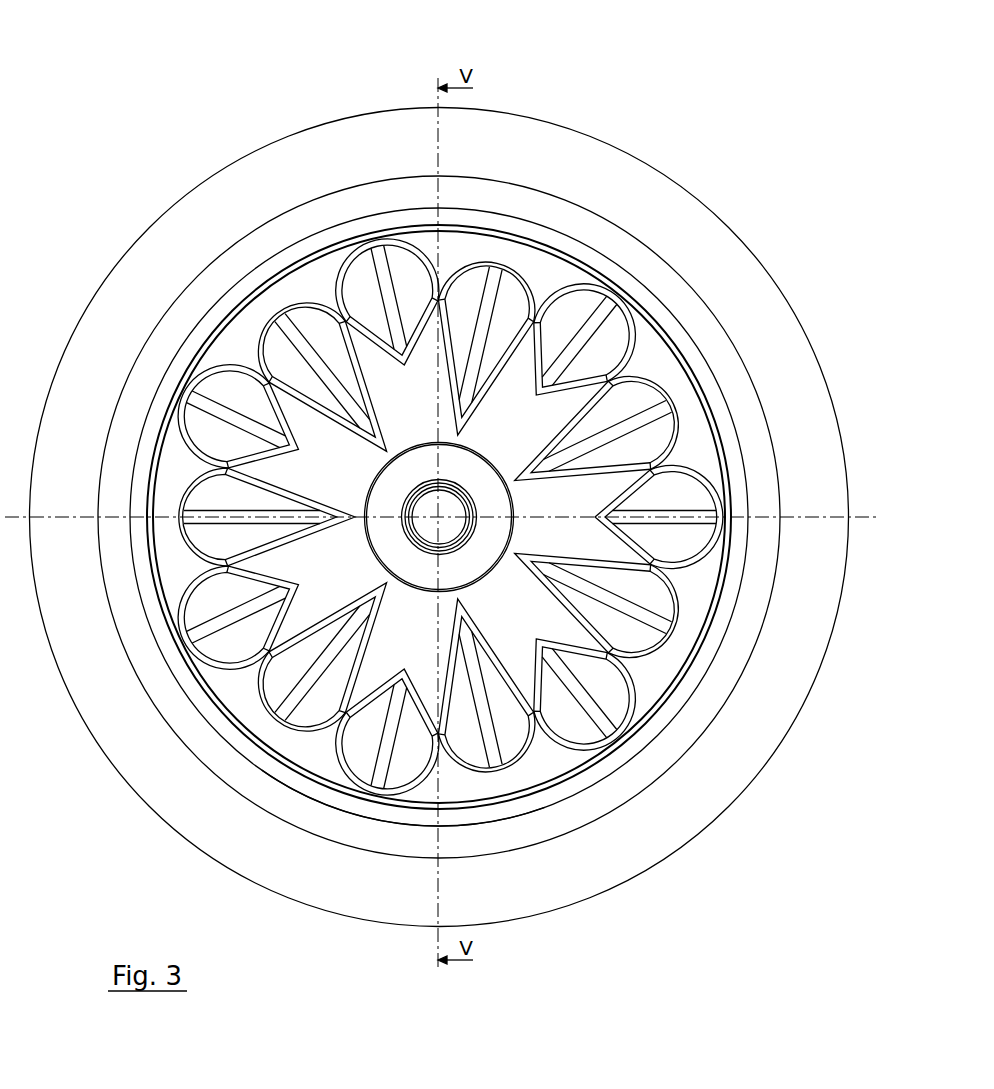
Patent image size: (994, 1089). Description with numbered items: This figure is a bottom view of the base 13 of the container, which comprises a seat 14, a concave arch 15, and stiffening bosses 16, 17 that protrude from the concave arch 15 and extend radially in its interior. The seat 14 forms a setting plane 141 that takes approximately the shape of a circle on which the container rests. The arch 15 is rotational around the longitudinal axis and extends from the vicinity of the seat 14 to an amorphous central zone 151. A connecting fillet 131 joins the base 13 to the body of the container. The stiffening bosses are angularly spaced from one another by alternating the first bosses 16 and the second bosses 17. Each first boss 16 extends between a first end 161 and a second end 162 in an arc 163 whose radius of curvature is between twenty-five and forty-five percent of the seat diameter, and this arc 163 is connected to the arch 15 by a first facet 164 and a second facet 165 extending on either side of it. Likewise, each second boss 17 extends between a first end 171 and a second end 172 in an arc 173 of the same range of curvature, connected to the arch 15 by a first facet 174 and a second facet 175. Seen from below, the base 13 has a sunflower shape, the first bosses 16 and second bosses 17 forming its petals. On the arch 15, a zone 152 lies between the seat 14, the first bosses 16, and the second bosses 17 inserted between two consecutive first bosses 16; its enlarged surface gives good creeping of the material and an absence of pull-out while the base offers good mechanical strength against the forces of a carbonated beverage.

The base 13 is at (672, 123).
The connecting fillet 131 is at (683, 230).
The seat 14 is at (497, 832).
The setting plane 141 is at (400, 830).
The concave arch 15 is at (425, 250).
The amorphous central zone 151 is at (453, 500).
The zone 152 is at (163, 479).
The first bosses 16 is at (633, 332).
The first end 161 is at (183, 642).
The second end 162 is at (393, 658).
The arc 163 is at (602, 722).
The first facet 164 is at (603, 687).
The second facet 165 is at (570, 717).
The second bosses 17 is at (496, 257).
The first end 171 is at (382, 572).
The second end 172 is at (165, 521).
The arc 173 is at (297, 343).
The first facet 174 is at (323, 325).
The second facet 175 is at (283, 353).